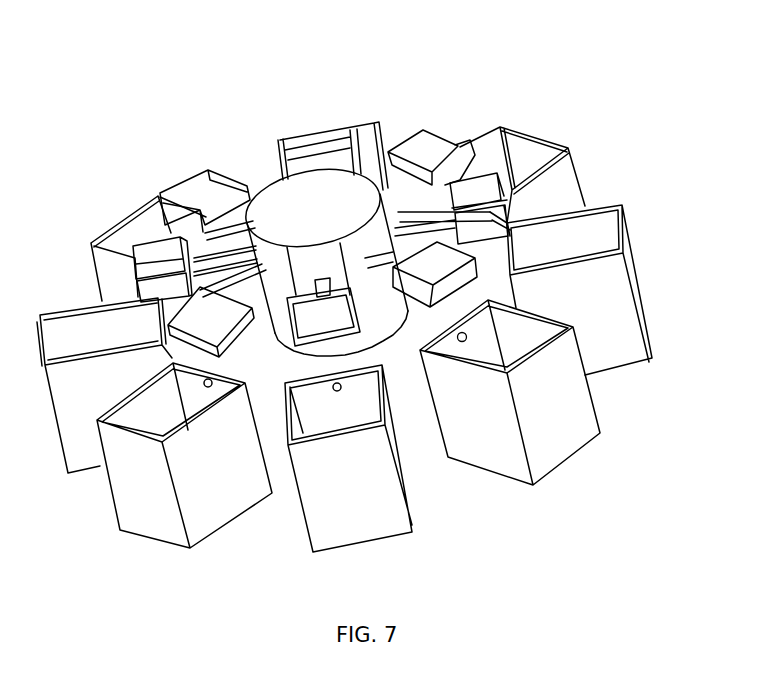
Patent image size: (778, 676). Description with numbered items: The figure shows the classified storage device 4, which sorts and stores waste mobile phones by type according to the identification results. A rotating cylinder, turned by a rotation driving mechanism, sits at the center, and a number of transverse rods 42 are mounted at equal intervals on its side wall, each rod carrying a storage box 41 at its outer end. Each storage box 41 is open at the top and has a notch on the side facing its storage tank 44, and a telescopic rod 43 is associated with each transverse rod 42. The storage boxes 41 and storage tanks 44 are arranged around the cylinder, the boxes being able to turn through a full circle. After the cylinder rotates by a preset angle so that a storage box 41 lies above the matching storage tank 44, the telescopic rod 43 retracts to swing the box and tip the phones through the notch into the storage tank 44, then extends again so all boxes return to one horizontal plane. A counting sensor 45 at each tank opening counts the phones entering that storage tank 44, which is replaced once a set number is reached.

The classified storage device 4 is at (320, 207).
The storage box 41 is at (160, 268).
The transverse rod 42 is at (412, 228).
The telescopic rod 43 is at (279, 305).
The storage tank 44 is at (559, 241).
The counting sensor 45 is at (466, 340).